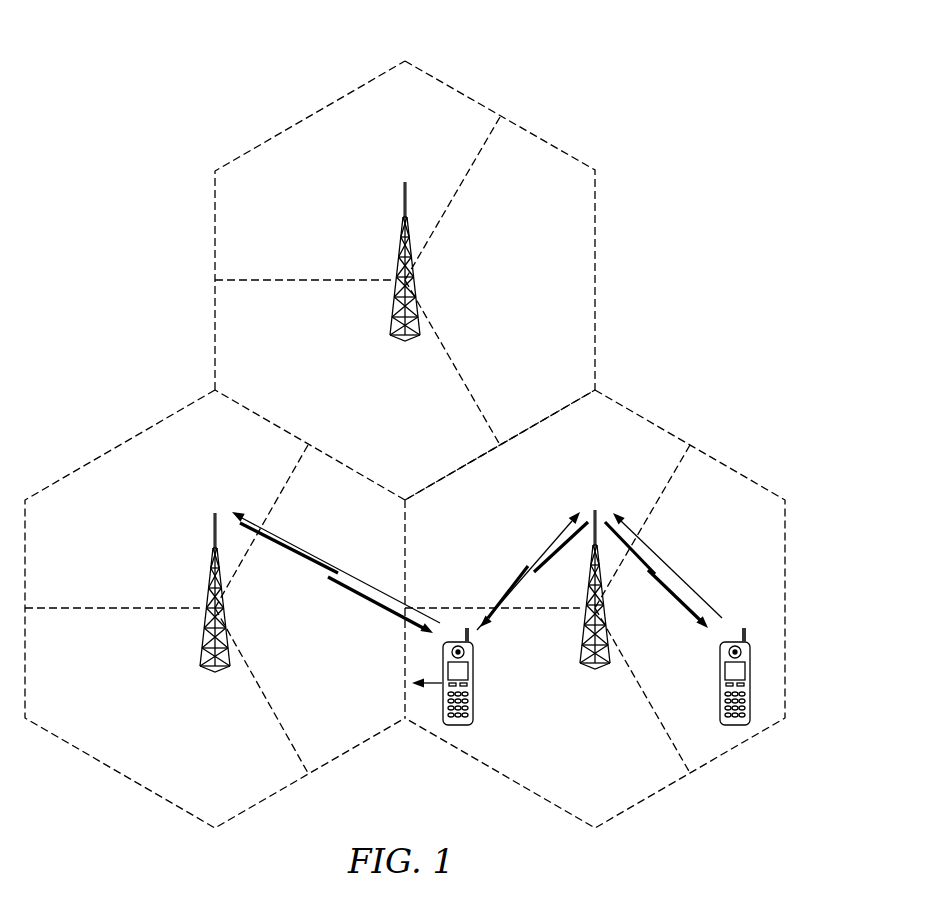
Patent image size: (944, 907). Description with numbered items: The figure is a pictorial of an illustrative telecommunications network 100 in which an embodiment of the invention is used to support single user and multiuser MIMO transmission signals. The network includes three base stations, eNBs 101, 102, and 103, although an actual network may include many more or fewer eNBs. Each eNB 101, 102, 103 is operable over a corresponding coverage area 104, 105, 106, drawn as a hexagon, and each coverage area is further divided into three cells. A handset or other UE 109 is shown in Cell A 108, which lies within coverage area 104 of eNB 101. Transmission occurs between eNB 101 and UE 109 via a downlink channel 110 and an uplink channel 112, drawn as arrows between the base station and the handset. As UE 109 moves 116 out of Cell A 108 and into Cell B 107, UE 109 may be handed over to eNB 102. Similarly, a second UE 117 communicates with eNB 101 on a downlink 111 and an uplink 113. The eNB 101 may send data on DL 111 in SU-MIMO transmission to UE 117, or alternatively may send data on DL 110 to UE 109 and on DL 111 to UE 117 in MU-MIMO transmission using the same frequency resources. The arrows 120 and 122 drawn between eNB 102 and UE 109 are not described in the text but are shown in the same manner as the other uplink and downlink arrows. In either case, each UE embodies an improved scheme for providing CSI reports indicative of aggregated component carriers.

The telecommunications network 100 is at (210, 60).
The eNB 101 is at (585, 663).
The eNB 102 is at (211, 573).
The eNB 103 is at (400, 243).
The coverage area 104 is at (727, 753).
The coverage area 105 is at (115, 777).
The coverage area 106 is at (597, 280).
The Cell B 107 is at (358, 718).
The Cell A 108 is at (600, 783).
The UE 109 is at (476, 706).
The downlink channel 110 is at (518, 603).
The downlink 111 is at (680, 606).
The uplink channel 112 is at (548, 538).
The uplink 113 is at (657, 553).
The movement of UE 116 is at (432, 690).
The UE 117 is at (720, 682).
The uplink transmission 120 is at (290, 562).
The downlink transmission 122 is at (373, 588).